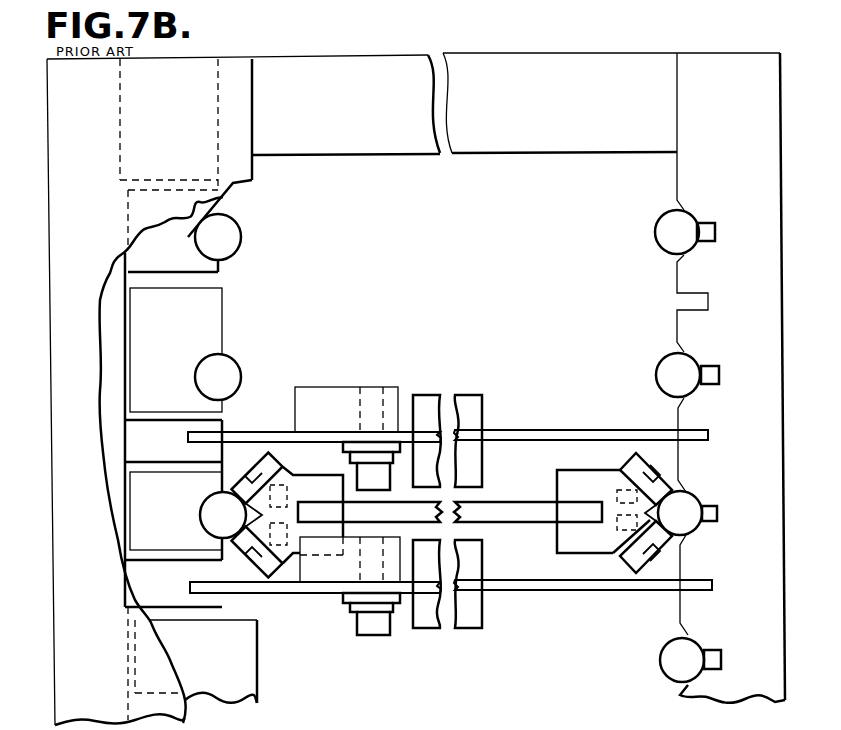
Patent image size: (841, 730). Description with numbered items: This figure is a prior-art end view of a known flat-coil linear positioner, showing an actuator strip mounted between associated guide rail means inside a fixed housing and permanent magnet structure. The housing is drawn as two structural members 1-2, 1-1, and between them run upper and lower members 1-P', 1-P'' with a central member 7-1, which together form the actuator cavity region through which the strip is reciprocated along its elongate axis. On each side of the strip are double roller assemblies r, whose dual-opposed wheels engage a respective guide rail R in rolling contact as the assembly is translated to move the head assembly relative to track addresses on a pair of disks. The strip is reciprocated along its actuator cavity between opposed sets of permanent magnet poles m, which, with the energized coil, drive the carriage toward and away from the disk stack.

The first structural member 1-2 is at (580, 119).
The second structural member 1-1 is at (740, 119).
The upper prestressing bar 1-P' is at (448, 406).
The lower prestressing bar 1-P'' is at (451, 619).
The connecting shaft 7-1 is at (515, 510).
The permanent magnet poles m is at (470, 400).
The roller assemblies r is at (627, 467).
The guide rail R is at (690, 505).